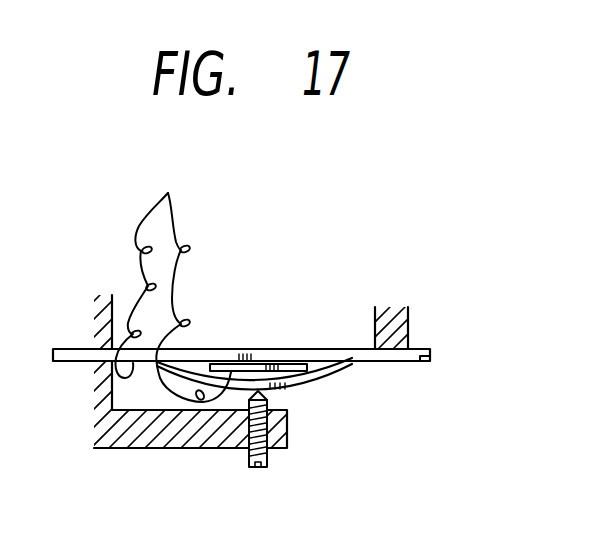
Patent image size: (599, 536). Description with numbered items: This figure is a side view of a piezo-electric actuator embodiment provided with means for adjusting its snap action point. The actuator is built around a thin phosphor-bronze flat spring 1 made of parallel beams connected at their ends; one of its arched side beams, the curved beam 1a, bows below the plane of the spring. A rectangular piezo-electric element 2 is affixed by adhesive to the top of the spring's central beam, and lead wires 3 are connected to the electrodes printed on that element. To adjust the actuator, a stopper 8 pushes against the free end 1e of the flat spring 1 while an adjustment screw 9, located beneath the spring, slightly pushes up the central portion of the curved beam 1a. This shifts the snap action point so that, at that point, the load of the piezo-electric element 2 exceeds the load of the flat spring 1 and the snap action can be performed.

The flat spring 1 is at (305, 349).
The curved beam 1a is at (337, 376).
The free end 1e is at (432, 357).
The piezo-electric element 2 is at (297, 371).
The lead wires 3 is at (173, 282).
The stopper 8 is at (407, 327).
The adjustment screw 9 is at (270, 428).